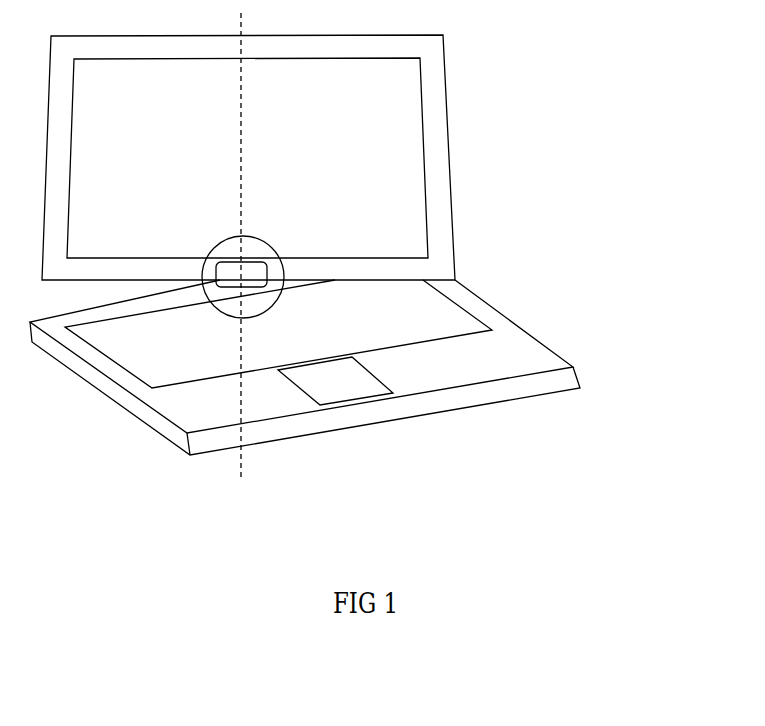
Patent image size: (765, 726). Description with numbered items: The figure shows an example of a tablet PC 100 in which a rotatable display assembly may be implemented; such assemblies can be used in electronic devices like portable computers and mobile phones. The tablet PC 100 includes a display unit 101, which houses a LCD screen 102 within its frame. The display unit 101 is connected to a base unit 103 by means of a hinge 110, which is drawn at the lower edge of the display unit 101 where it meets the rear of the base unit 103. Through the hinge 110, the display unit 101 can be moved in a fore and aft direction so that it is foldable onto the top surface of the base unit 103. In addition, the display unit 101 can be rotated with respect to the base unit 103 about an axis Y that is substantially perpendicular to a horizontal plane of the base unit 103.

The tablet PC 100 is at (583, 146).
The display unit 101 is at (445, 80).
The LCD screen 102 is at (133, 95).
The base unit 103 is at (530, 330).
The hinge 110 is at (252, 240).